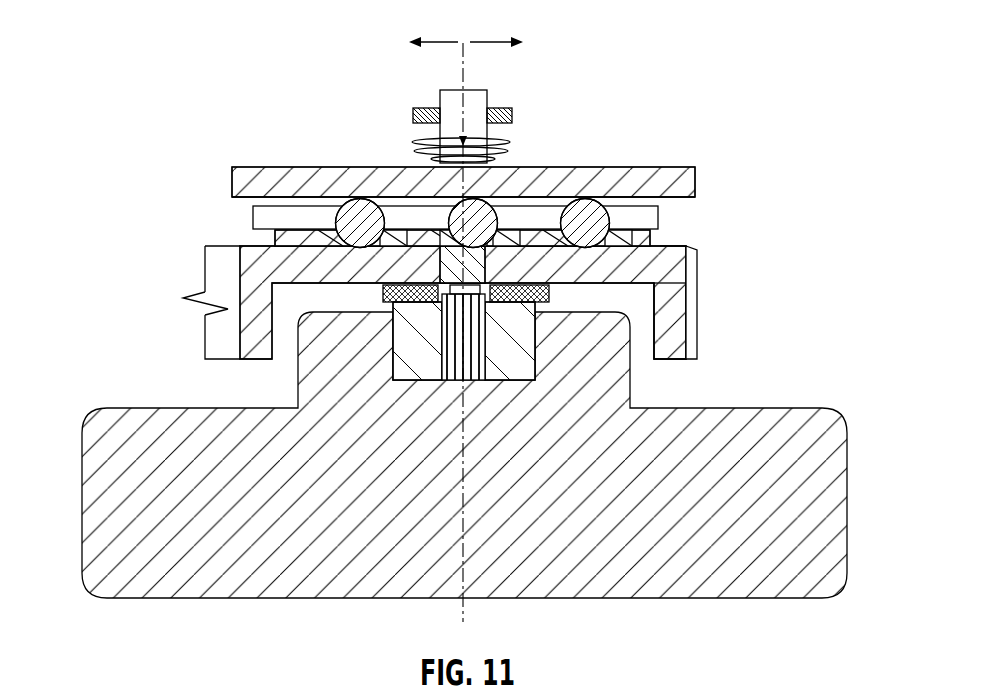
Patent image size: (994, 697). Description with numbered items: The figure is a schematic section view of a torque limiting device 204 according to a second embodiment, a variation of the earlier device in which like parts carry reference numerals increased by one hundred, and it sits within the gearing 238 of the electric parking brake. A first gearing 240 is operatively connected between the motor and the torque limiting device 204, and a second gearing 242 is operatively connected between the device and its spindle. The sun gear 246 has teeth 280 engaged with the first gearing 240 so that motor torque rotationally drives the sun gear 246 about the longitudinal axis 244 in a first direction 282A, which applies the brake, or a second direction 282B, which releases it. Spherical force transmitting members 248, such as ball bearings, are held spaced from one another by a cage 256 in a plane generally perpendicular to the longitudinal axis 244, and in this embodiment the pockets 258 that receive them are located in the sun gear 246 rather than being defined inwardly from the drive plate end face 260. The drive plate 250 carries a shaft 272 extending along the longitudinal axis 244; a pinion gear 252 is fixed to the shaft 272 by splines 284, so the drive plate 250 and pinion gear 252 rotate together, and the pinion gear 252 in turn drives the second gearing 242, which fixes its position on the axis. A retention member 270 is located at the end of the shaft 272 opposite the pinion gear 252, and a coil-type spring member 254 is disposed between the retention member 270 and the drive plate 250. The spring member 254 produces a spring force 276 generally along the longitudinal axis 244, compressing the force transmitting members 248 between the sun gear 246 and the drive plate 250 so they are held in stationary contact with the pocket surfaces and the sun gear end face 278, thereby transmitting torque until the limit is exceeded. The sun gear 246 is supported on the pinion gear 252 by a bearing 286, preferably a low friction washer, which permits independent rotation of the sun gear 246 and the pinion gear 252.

The torque limiting device 204 is at (454, 312).
The gearing 238 is at (476, 455).
The first gearing 240 is at (453, 295).
The second gearing 242 is at (847, 505).
The longitudinal axis 244 is at (437, 103).
The sun gear 246 is at (670, 342).
The force transmitting members 248 is at (590, 213).
The drive plate 250 is at (478, 189).
The pinion gear 252 is at (514, 360).
The spring member 254 is at (430, 163).
The cage 256 is at (522, 169).
The pockets 258 is at (553, 232).
The drive plate end face 260 is at (235, 198).
The retention member 270 is at (427, 107).
The shaft 272 is at (485, 337).
The spring force 276 is at (466, 125).
The sun gear end face 278 is at (678, 247).
The teeth 280 is at (697, 315).
The first direction 282A is at (435, 42).
The second direction 282B is at (498, 42).
The splines 284 is at (477, 357).
The bearing 286 is at (383, 303).